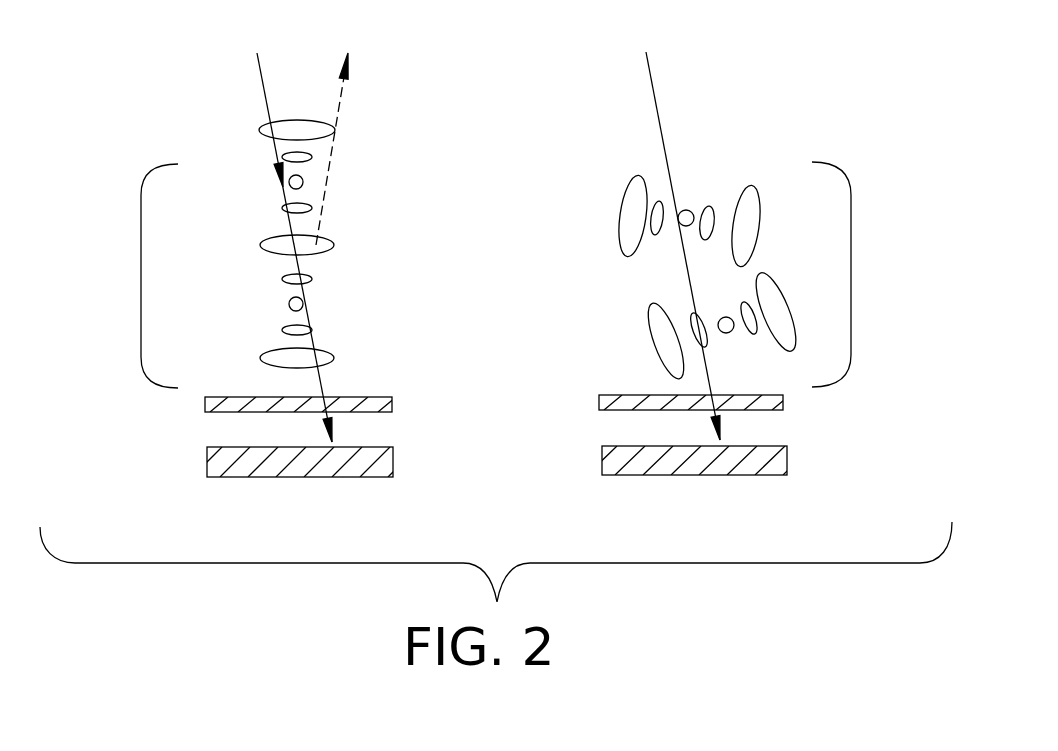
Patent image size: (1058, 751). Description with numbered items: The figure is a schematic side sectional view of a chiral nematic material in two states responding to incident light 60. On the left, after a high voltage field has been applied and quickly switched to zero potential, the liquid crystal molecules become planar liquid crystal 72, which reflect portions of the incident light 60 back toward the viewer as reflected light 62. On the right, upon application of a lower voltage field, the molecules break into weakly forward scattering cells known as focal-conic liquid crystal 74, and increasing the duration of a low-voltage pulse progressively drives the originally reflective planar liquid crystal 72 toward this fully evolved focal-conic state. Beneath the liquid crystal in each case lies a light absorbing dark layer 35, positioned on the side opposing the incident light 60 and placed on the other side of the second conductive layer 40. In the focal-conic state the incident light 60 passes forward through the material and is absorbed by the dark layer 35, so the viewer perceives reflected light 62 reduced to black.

The light absorbing dark layer 35 is at (205, 400).
The second conductive layer 40 is at (207, 455).
The incident light 60 is at (258, 78).
The reflected light 62 is at (338, 107).
The planar liquid crystal 72 is at (141, 277).
The focal-conic liquid crystal 74 is at (851, 274).